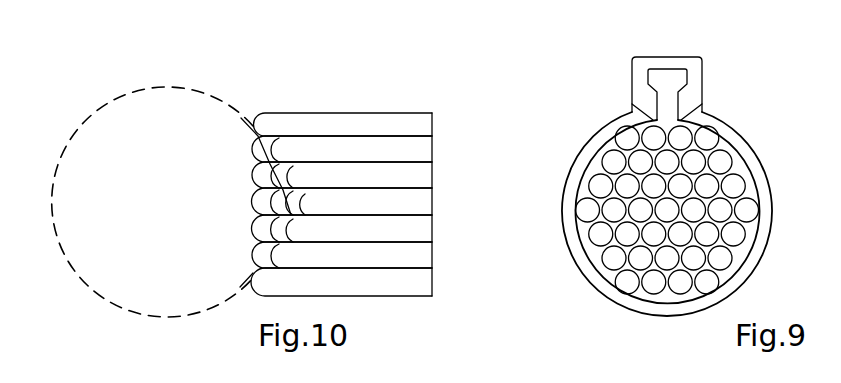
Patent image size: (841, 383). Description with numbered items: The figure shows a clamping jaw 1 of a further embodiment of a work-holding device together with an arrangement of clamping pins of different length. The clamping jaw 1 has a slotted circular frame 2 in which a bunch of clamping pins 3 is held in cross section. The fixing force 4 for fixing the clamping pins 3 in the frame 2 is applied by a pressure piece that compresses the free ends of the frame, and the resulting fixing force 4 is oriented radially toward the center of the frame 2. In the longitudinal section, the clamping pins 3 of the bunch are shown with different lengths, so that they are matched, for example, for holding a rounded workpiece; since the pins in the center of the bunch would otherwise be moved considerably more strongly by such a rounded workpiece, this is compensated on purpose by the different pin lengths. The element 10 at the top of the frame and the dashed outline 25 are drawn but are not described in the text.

In FIG. 9, the clamping jaw 1 is at (516, 91).
In FIG. 9, the slotted circular frame 2 is at (750, 260).
In FIG. 10, the clamping pins 3 is at (408, 283).
In FIG. 9, the clamping pins 3 is at (602, 235).
In FIG. 9, the fixing force 4 is at (560, 116).
In FIG. 9, the holding bracket 10 is at (668, 68).
In FIG. 10, the coil winding circle 25 is at (168, 170).